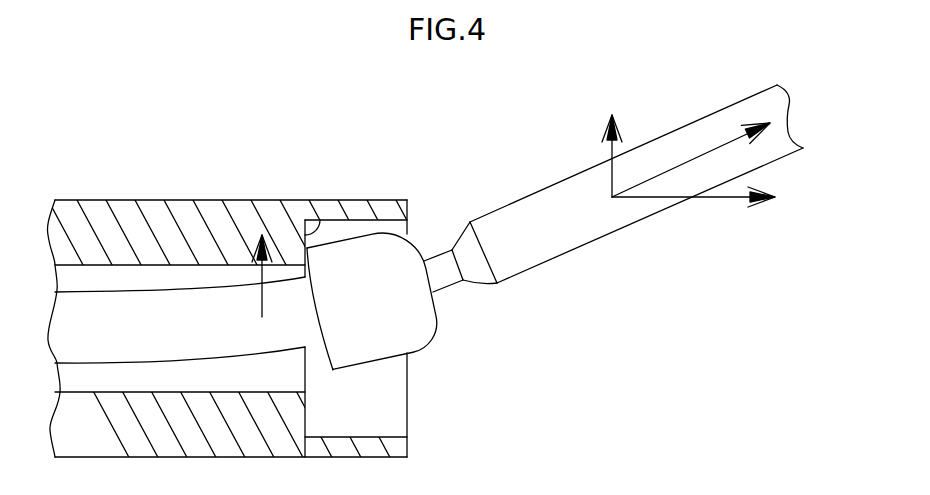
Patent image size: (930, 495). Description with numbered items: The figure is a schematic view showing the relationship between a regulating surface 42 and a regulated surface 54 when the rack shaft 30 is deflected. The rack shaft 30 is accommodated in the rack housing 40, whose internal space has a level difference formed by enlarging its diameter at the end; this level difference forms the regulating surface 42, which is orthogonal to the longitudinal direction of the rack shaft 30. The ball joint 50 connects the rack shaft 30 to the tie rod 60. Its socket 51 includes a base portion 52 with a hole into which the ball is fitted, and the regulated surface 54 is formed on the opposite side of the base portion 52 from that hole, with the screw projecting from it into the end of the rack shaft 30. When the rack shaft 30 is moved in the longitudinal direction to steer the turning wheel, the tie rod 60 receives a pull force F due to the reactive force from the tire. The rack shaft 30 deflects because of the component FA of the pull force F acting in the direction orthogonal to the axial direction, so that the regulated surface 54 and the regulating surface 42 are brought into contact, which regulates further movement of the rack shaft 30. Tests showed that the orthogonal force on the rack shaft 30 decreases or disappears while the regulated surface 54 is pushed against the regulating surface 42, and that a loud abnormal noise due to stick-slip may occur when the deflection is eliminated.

The rack shaft 30 is at (178, 366).
The rack housing 40 is at (92, 200).
The regulating surface 42 is at (310, 220).
The ball joint 50 is at (555, 254).
The socket 51 is at (417, 357).
The base portion 52 is at (428, 322).
The regulated surface 54 is at (322, 362).
The tie rod 60 is at (515, 203).
The pull force F is at (708, 150).
The component of the pull force FA is at (257, 302).